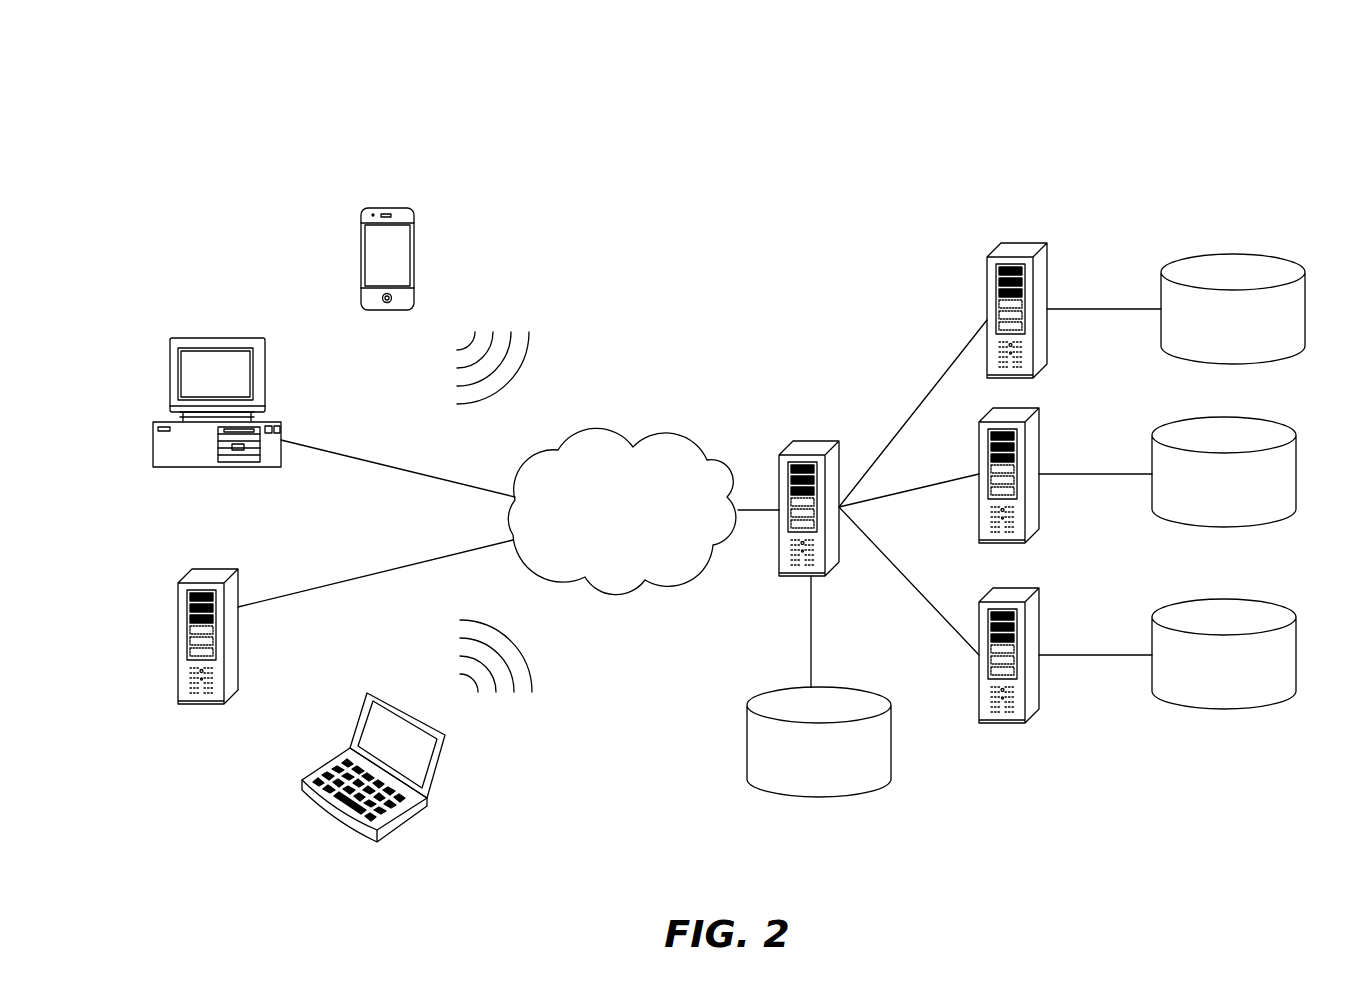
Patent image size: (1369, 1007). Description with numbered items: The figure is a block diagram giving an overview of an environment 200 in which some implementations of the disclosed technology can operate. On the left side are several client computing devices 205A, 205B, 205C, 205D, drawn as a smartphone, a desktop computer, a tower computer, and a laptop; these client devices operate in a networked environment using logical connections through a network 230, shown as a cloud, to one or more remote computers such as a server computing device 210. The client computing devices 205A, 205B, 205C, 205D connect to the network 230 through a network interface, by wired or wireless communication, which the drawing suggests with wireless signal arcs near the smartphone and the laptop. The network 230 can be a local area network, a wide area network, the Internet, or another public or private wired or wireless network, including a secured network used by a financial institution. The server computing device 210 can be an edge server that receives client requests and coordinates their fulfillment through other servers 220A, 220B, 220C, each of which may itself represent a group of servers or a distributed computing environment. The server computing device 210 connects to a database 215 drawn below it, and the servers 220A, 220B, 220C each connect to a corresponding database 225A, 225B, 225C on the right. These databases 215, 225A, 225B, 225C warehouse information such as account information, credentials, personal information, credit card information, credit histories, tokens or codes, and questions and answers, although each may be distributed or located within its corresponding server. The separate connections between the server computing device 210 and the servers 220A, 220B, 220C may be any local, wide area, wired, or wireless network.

The environment 200 is at (1102, 125).
The client computing device 205A is at (403, 207).
The client computing device 205B is at (257, 339).
The client computing device 205C is at (232, 566).
The client computing device 205D is at (442, 767).
The network 230 is at (677, 432).
The server computing device 210 is at (820, 440).
The database 215 is at (868, 688).
The server 220A is at (1047, 242).
The server 220B is at (1040, 407).
The server 220C is at (1040, 587).
The database 225A is at (1228, 254).
The database 225B is at (1220, 417).
The database 225C is at (1220, 598).